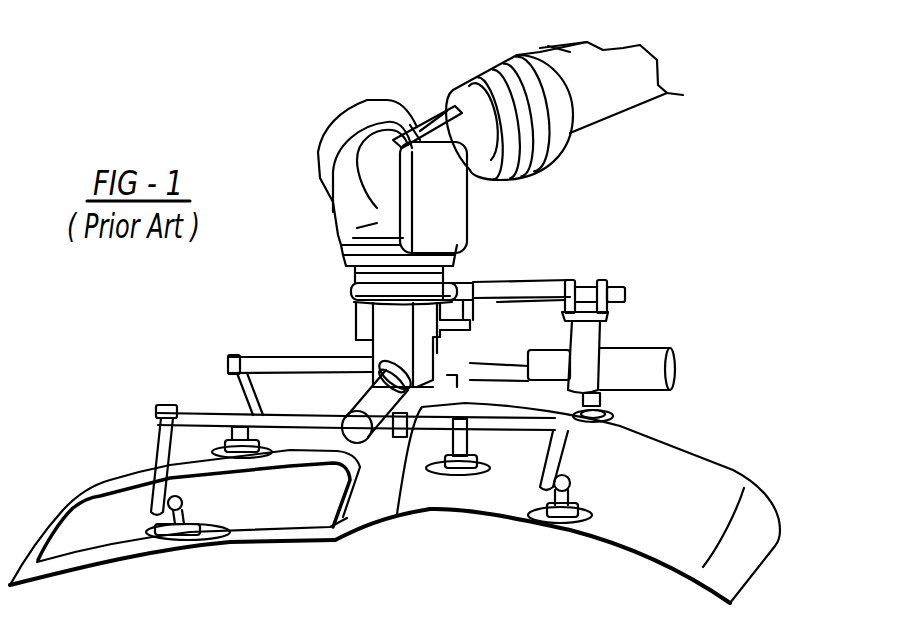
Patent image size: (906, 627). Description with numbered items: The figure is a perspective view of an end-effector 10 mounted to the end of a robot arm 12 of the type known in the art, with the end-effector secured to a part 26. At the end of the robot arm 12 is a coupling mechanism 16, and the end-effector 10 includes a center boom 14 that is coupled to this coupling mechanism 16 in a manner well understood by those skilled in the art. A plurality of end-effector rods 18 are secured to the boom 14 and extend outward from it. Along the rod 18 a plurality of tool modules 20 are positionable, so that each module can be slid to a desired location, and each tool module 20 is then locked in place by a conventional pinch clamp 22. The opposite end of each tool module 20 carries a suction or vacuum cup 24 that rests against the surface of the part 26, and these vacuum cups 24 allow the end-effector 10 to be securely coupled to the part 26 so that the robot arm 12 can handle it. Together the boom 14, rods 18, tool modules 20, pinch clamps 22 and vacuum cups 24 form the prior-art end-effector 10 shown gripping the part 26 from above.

The end-effector 10 is at (636, 282).
The robot arm 12 is at (585, 105).
The center boom 14 is at (372, 333).
The coupling mechanism 16 is at (352, 289).
The end-effector rod 18 is at (203, 416).
The tool module 20 is at (163, 446).
The pinch clamp 22 is at (172, 408).
The suction or vacuum cup 24 is at (217, 519).
The part 26 is at (660, 470).